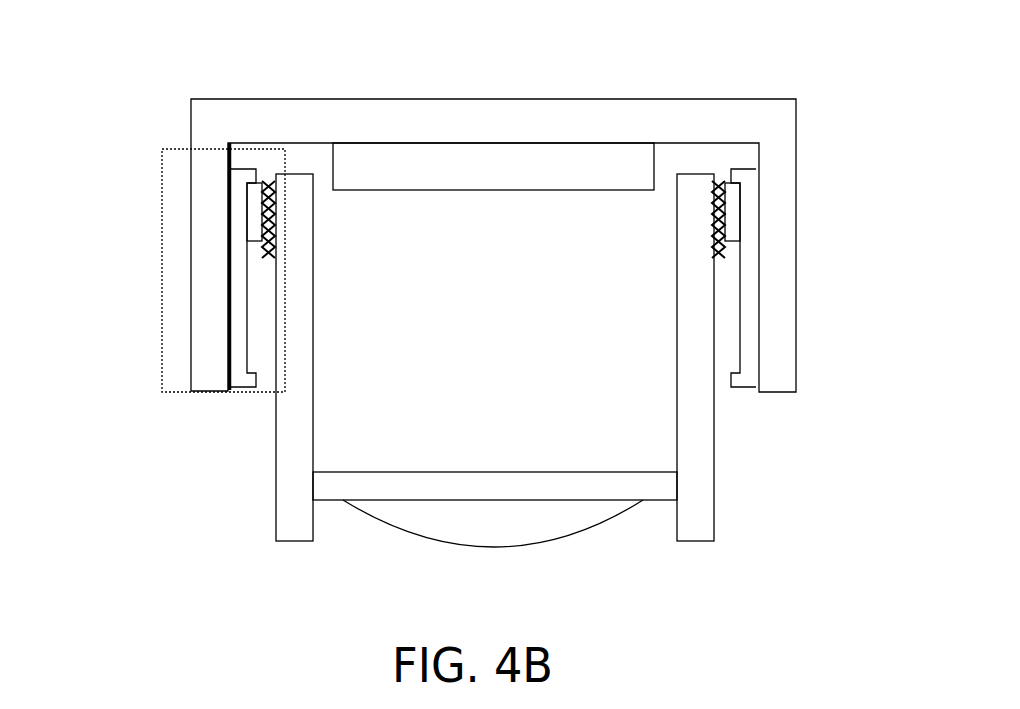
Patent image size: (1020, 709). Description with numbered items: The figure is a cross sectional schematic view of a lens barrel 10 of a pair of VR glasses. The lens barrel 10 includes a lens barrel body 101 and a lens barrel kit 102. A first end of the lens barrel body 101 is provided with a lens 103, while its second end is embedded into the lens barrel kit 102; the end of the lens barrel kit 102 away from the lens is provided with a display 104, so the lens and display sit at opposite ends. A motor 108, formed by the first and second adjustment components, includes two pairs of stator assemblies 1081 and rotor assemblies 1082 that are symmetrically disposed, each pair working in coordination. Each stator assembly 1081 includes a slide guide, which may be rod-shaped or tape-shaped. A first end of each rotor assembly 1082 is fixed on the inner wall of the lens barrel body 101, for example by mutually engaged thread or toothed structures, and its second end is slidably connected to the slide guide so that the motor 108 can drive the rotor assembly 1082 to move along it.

The lens barrel 10 is at (618, 54).
The lens barrel body 101 is at (714, 498).
The lens barrel kit 102 is at (782, 260).
The lens 103 is at (497, 547).
The display 104 is at (472, 190).
The motor 108 is at (410, 237).
The stator assembly 1081 is at (238, 288).
The rotor assembly 1082 is at (253, 210).